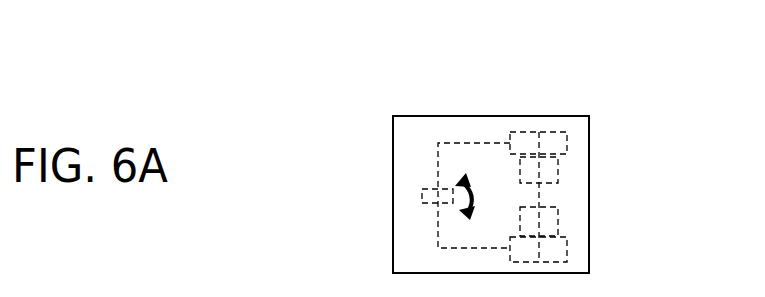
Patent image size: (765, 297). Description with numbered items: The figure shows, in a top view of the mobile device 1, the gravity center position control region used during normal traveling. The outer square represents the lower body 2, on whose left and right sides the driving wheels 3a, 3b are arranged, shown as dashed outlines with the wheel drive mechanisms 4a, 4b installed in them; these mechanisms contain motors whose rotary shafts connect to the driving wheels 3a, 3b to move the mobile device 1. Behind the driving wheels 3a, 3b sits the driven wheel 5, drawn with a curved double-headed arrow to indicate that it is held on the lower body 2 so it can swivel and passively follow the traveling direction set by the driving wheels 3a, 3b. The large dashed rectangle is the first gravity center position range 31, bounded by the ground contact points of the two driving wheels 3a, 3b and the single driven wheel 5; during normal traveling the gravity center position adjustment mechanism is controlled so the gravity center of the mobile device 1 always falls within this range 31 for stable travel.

The mobile device 1 is at (390, 91).
The lower body 2 is at (500, 116).
The first gravity center position range 31 is at (437, 162).
The driven wheel 5 is at (421, 195).
The driving wheel 3a is at (567, 137).
The wheel drive mechanism 4a is at (558, 176).
The wheel drive mechanism 4b is at (558, 227).
The driving wheel 3b is at (567, 258).